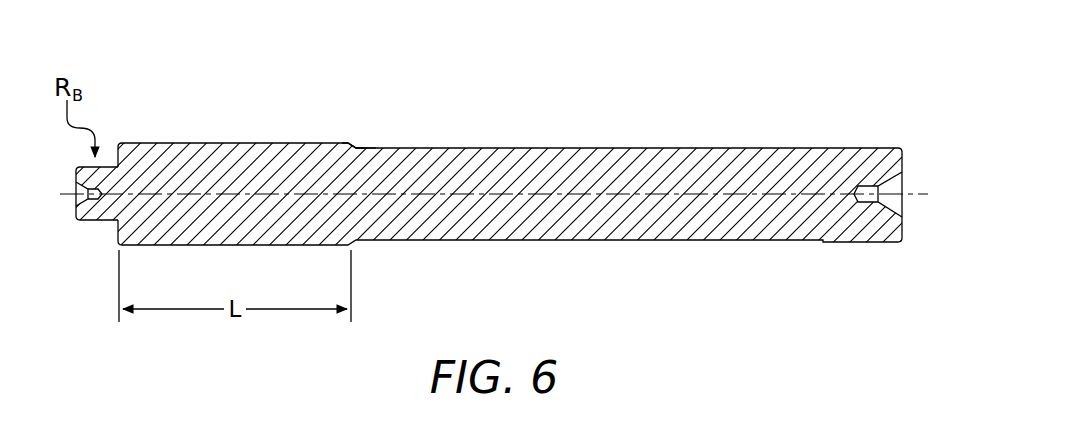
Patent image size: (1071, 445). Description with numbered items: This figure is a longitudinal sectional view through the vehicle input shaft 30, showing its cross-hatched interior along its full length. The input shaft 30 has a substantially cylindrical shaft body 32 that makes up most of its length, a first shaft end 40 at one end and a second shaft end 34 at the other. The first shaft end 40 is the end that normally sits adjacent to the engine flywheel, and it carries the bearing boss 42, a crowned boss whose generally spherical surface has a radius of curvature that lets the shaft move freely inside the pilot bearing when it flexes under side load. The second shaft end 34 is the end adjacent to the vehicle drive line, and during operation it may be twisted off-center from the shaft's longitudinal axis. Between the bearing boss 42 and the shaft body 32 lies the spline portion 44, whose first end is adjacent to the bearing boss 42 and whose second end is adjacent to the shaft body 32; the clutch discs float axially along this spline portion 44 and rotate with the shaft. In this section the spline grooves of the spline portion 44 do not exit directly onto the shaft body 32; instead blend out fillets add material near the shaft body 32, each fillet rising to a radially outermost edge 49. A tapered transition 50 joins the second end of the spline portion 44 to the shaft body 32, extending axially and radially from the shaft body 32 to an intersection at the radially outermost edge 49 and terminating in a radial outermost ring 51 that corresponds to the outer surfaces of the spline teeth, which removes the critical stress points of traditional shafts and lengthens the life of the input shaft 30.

The input shaft 30 is at (512, 112).
The shaft body 32 is at (622, 163).
The second shaft end 34 is at (905, 231).
The first shaft end 40 is at (75, 214).
The bearing boss 42 is at (96, 222).
The spline portion 44 is at (352, 142).
The radially outermost edge 49 is at (352, 144).
The tapered transition 50 is at (360, 148).
The radial outermost ring 51 is at (355, 146).